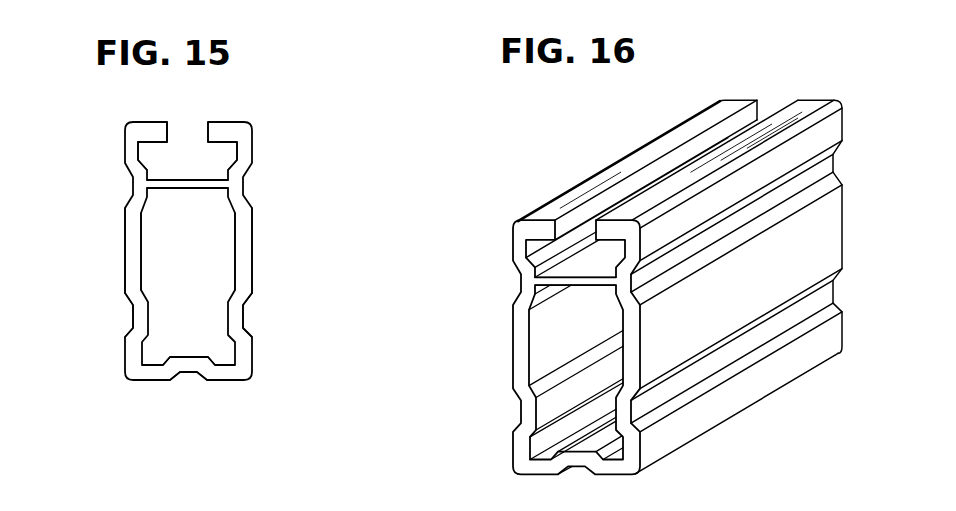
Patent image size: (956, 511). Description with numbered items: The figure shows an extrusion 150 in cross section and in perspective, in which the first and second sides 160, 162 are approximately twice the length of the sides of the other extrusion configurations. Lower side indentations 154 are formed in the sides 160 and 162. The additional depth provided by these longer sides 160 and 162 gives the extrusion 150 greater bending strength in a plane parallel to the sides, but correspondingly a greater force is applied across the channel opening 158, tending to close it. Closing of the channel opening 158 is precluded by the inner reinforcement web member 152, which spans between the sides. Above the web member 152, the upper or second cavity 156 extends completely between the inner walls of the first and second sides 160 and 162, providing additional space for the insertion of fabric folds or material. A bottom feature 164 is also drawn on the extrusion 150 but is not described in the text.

In FIG. 15, the extruded rail member 150 is at (105, 119).
In FIG. 16, the extruded rail member 150 is at (581, 145).
In FIG. 15, the web 152 is at (205, 182).
In FIG. 16, the web 152 is at (579, 288).
In FIG. 15, the projecting ribs 154 is at (132, 318).
In FIG. 15, the top channel 156 is at (196, 147).
In FIG. 15, the lip flange 158 is at (173, 127).
In FIG. 15, the right side wall 160 is at (246, 263).
In FIG. 15, the left side wall 162 is at (133, 238).
In FIG. 15, the bottom recess 164 is at (200, 365).